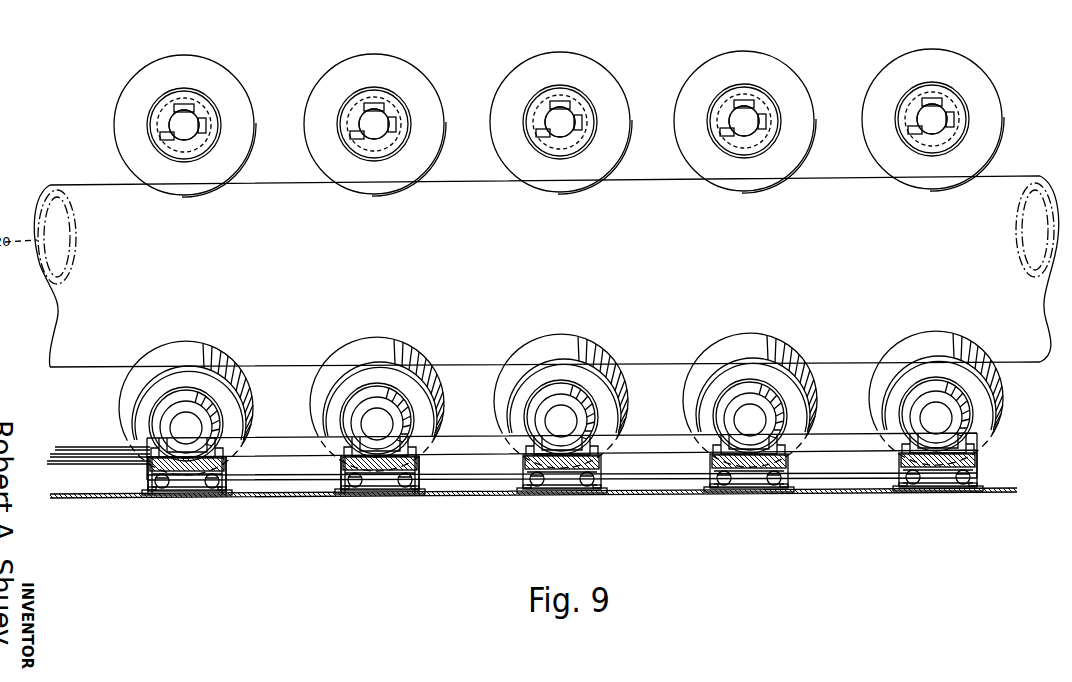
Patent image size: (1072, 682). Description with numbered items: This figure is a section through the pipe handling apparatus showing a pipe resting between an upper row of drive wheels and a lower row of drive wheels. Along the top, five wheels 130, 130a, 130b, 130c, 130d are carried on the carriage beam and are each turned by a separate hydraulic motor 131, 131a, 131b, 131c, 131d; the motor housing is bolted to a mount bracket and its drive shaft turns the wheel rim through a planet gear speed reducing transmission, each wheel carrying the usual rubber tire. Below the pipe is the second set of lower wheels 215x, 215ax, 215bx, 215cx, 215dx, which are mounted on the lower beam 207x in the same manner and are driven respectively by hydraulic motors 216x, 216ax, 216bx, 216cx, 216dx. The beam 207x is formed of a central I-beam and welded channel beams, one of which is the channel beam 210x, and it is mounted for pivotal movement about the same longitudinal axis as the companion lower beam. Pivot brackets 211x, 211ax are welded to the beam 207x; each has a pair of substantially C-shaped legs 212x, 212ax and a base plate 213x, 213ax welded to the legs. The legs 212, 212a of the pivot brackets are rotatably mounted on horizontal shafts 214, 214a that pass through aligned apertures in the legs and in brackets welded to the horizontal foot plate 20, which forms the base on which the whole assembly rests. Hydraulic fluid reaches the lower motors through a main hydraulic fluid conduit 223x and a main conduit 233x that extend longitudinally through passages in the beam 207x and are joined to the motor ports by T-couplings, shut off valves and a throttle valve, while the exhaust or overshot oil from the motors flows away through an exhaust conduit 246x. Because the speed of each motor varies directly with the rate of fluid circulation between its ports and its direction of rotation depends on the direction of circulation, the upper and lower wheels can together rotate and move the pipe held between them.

The foot plate 20 is at (845, 494).
The wheel 130 is at (222, 75).
The wheel 130a is at (412, 75).
The wheel 130b is at (596, 73).
The wheel 130c is at (778, 67).
The wheel 130d is at (967, 66).
The hydraulic motor 131 is at (187, 122).
The hydraulic motor 131a is at (377, 121).
The hydraulic motor 131b is at (563, 119).
The hydraulic motor 131c is at (748, 118).
The hydraulic motor 131d is at (937, 116).
The beam 207x is at (672, 489).
The channel beam 210x is at (507, 477).
The pivot bracket 211x is at (133, 468).
The pivot bracket 211ax is at (337, 463).
The legs 212 is at (213, 490).
The legs 212a is at (355, 490).
The legs 212x is at (226, 468).
The legs 212ax is at (405, 490).
The base plate 213x is at (250, 497).
The base plate 213ax is at (435, 492).
The horizontal shaft 214 is at (197, 487).
The horizontal shaft 214a is at (376, 487).
The lower wheel 215x is at (197, 352).
The lower wheel 215ax is at (388, 350).
The lower wheel 215bx is at (588, 348).
The lower wheel 215cx is at (770, 348).
The lower wheel 215dx is at (945, 344).
The hydraulic motor 216x is at (195, 425).
The hydraulic motor 216ax is at (384, 424).
The hydraulic motor 216bx is at (568, 420).
The hydraulic motor 216cx is at (758, 420).
The hydraulic motor 216dx is at (946, 418).
The main hydraulic fluid conduit 223x is at (66, 463).
The main conduit 233x is at (78, 446).
The exhaust conduit 246x is at (102, 452).